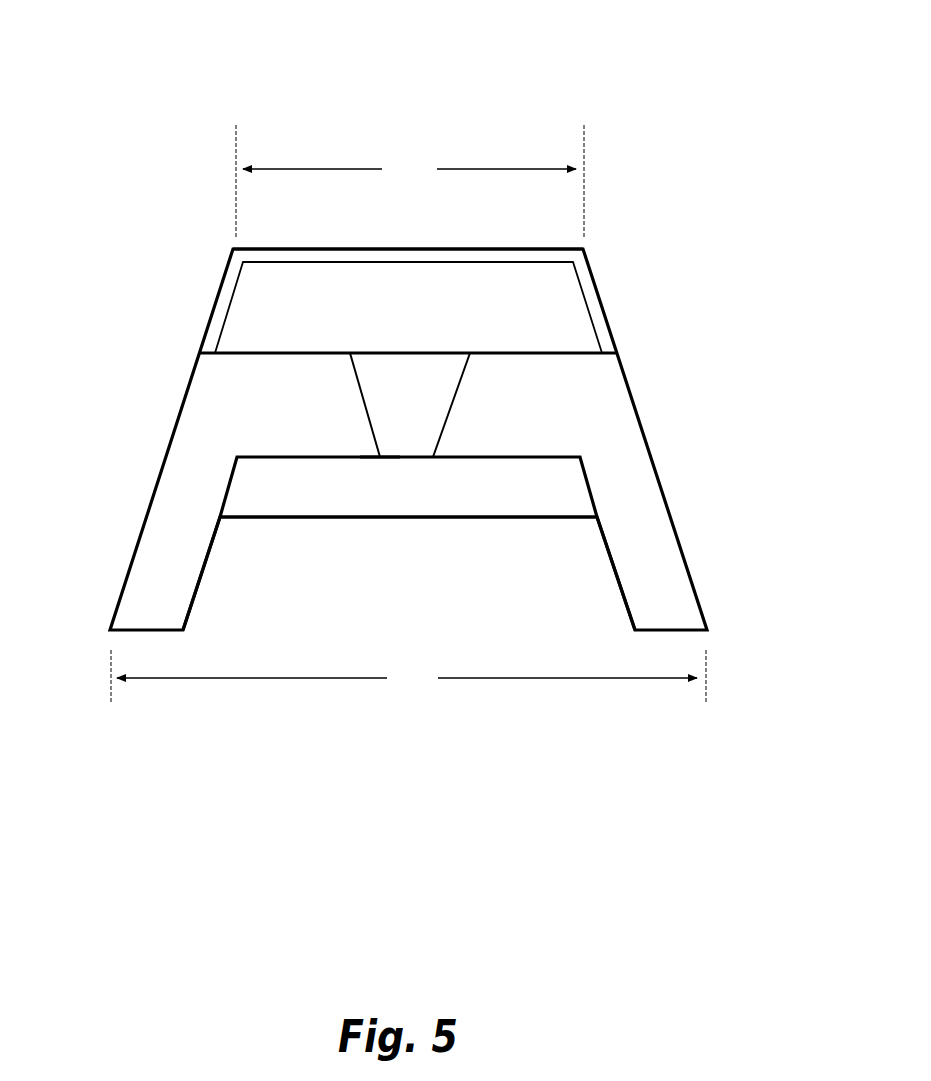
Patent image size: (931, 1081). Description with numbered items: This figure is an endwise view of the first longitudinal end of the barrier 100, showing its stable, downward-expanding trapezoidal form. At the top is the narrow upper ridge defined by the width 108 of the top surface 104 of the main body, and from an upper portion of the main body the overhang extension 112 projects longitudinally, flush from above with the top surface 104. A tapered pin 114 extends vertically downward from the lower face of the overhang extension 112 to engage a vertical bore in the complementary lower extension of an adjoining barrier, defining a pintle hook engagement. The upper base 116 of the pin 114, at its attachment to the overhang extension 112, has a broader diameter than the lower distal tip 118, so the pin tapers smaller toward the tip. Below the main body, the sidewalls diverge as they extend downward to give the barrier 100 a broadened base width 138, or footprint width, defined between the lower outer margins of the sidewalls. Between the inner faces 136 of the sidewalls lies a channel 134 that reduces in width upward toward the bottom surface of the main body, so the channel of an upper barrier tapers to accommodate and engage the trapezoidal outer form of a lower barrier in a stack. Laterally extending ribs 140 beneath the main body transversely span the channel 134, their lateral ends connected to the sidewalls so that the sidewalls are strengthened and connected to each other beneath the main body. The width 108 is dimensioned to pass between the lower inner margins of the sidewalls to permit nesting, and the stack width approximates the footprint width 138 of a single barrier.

The barrier 100 is at (477, 118).
The top surface 104 is at (338, 243).
The width of the top surface 108 is at (410, 181).
The overhang extension 112 is at (548, 322).
The tapered pin 114 is at (427, 405).
The upper base of the pin 116 is at (365, 364).
The lower distal tip of the pin 118 is at (388, 448).
The channel 134 is at (432, 597).
The inner faces of the sidewalls 136 is at (197, 603).
The base width 138 is at (408, 676).
The ribs 140 is at (438, 483).